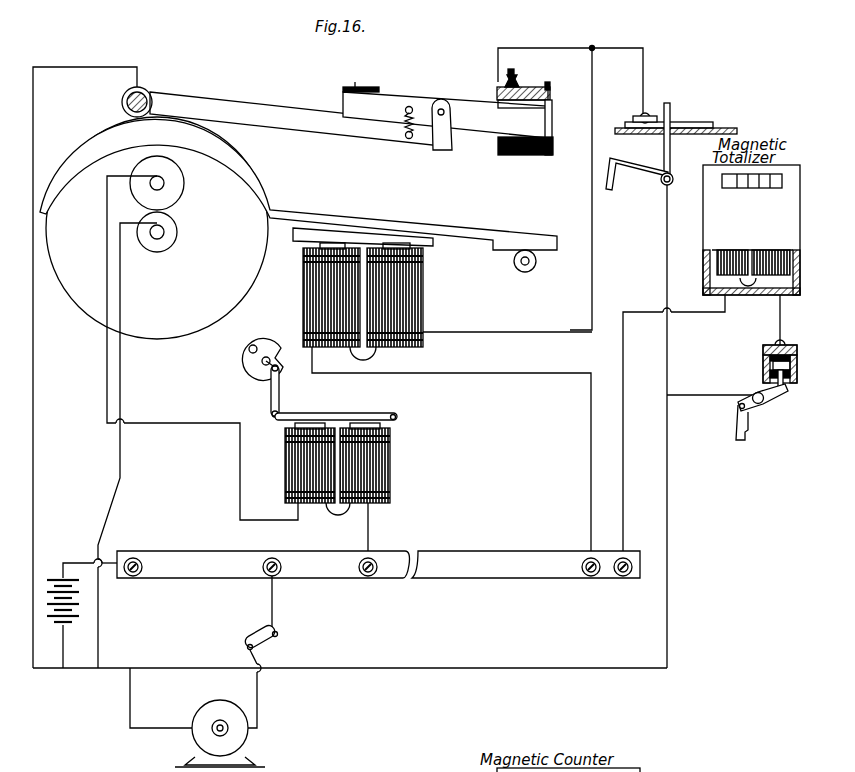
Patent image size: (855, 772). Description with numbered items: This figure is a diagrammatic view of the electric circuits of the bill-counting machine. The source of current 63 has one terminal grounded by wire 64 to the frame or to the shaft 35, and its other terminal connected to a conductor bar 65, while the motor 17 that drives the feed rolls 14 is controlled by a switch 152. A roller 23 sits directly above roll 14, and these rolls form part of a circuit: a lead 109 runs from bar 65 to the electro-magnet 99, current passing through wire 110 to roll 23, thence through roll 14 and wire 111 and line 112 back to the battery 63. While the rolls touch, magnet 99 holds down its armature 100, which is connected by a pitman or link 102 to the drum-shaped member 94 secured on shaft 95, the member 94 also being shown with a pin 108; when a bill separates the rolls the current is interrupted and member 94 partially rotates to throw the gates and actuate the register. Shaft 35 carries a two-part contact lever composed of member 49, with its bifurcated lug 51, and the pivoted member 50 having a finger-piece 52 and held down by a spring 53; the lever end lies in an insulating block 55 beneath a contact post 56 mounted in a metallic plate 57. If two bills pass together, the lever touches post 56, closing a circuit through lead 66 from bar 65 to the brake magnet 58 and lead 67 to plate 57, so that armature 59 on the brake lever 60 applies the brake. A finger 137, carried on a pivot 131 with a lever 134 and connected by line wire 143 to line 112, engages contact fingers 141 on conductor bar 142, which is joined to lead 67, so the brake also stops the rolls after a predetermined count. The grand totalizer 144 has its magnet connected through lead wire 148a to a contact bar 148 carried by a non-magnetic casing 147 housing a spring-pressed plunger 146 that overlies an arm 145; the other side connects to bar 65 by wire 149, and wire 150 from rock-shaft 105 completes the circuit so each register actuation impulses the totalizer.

The feed rolls 14 is at (162, 240).
The motor 17 is at (240, 738).
The roller 23 is at (165, 183).
The shaft 35 is at (122, 103).
The member 49 is at (297, 124).
The member 50 is at (390, 104).
The bifurcated lug 51 is at (438, 135).
The finger-piece 52 is at (361, 79).
The spring 53 is at (405, 128).
The block 55 is at (528, 155).
The contact post 56 is at (552, 110).
The metallic plate 57 is at (540, 94).
The magnet 58 is at (420, 284).
The armature 59 is at (348, 230).
The brake lever 60 is at (275, 213).
The source of current 63 is at (58, 572).
The wire 64 is at (33, 487).
The conductor bar 65 is at (447, 558).
The lead 66 is at (451, 373).
The lead 67 is at (507, 345).
The drum-shaped member 94 is at (256, 375).
The shaft 95 is at (272, 354).
The electro-magnet 99 is at (388, 480).
The armature 100 is at (357, 417).
The pitman or link 102 is at (279, 405).
The rock-shaft 105 is at (756, 410).
The pin 108 is at (253, 345).
The lead 109 is at (371, 530).
The wire 110 is at (107, 383).
The wire 111 is at (121, 403).
The line 112 is at (80, 670).
The pivot 131 is at (683, 189).
The lever 134 is at (636, 176).
The finger 137 is at (668, 158).
The contact fingers 141 is at (651, 116).
The conductor bar 142 is at (713, 124).
The line wire 143 is at (350, 681).
The grand totalizer 144 is at (751, 230).
The arm 145 is at (766, 400).
The spring-pressed plunger 146 is at (770, 366).
The non-magnetic casing 147 is at (765, 352).
The contact bar 148 is at (785, 345).
The lead wire 148a is at (778, 325).
The wire 149 is at (623, 450).
The wire 150 is at (694, 395).
The switch 152 is at (262, 638).